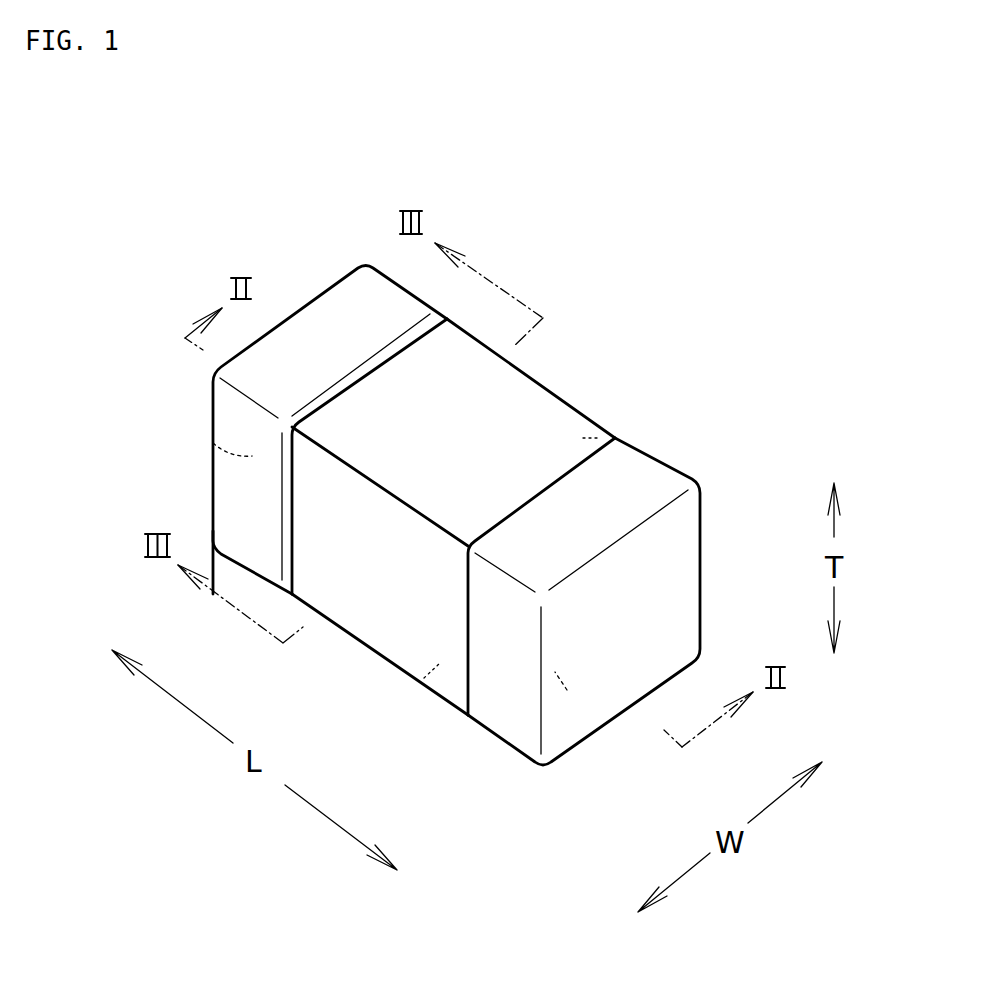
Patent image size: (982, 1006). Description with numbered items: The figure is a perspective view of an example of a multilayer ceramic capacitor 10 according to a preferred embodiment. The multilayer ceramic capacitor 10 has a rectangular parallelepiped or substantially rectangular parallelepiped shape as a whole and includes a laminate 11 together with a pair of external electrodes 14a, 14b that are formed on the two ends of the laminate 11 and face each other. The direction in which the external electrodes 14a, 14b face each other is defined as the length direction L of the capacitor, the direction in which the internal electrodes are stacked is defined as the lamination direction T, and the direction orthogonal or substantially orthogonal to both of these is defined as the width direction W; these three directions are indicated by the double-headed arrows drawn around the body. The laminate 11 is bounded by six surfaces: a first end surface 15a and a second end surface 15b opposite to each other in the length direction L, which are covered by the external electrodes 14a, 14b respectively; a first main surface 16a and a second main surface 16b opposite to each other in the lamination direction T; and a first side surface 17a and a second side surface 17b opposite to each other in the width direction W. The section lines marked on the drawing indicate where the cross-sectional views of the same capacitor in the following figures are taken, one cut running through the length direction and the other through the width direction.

The multilayer ceramic capacitor 10 is at (670, 275).
The laminate 11 is at (507, 392).
The external electrode 14a is at (337, 307).
The external electrode 14b is at (650, 468).
The first end surface 15a is at (213, 443).
The second end surface 15b is at (567, 690).
The first main surface 16a is at (563, 423).
The second main surface 16b is at (423, 679).
The first side surface 17a is at (387, 608).
The second side surface 17b is at (607, 438).